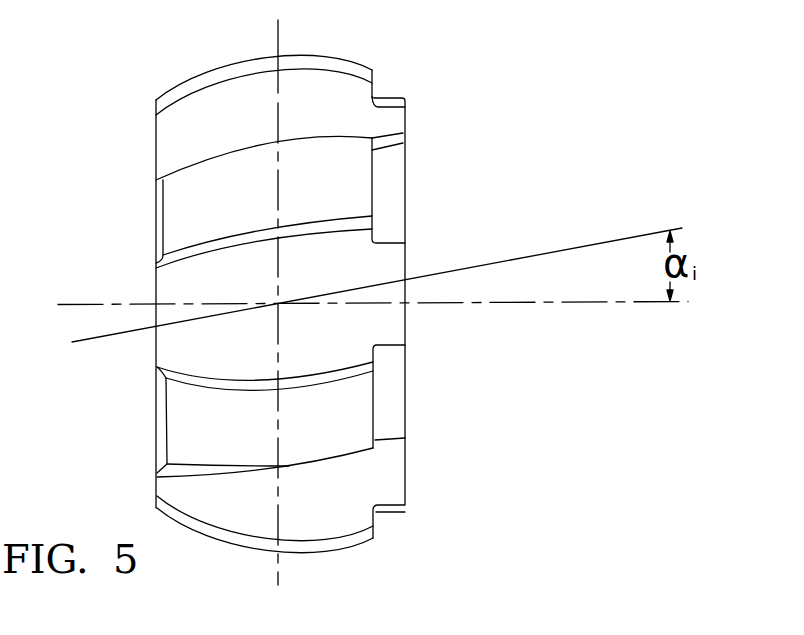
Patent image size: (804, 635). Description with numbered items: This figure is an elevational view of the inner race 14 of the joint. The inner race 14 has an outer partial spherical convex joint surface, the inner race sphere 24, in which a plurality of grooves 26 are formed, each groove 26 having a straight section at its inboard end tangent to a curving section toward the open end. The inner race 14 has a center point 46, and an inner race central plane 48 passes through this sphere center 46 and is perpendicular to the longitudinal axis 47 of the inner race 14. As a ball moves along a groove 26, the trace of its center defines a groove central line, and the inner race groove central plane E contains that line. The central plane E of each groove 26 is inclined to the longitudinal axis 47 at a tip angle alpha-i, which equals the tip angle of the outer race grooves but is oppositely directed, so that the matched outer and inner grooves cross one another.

The inner race 14 is at (437, 100).
The inner race sphere 24 is at (352, 398).
The grooves 26 is at (342, 260).
The center point 46 is at (278, 303).
The longitudinal axis 47 is at (477, 303).
The inner race central plane 48 is at (278, 45).
The inner race groove central plane E is at (138, 331).